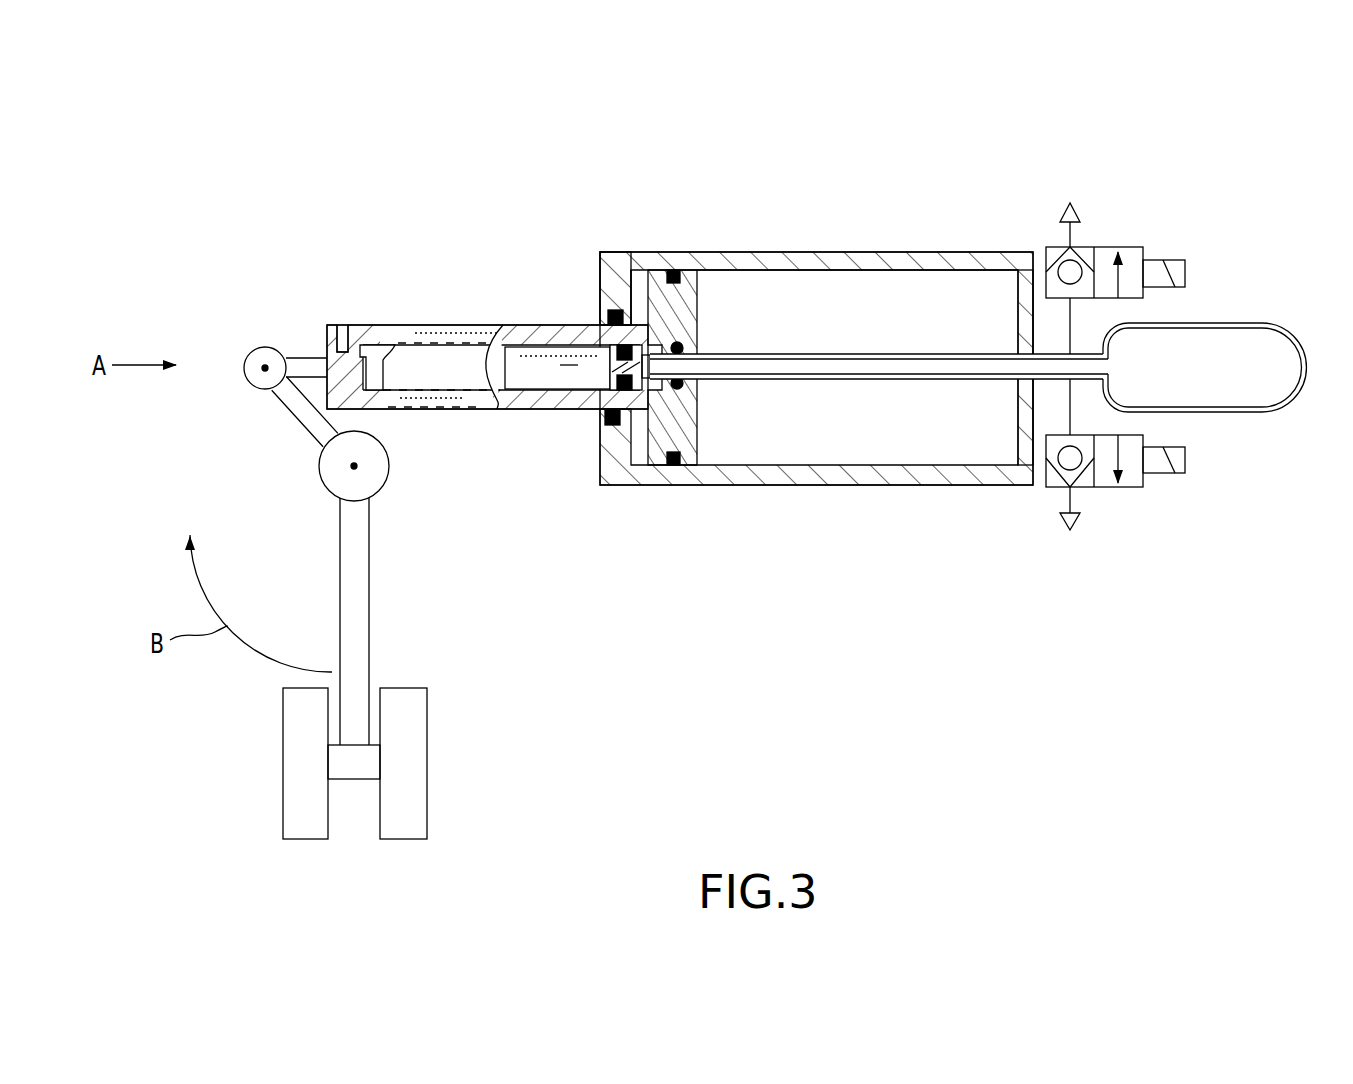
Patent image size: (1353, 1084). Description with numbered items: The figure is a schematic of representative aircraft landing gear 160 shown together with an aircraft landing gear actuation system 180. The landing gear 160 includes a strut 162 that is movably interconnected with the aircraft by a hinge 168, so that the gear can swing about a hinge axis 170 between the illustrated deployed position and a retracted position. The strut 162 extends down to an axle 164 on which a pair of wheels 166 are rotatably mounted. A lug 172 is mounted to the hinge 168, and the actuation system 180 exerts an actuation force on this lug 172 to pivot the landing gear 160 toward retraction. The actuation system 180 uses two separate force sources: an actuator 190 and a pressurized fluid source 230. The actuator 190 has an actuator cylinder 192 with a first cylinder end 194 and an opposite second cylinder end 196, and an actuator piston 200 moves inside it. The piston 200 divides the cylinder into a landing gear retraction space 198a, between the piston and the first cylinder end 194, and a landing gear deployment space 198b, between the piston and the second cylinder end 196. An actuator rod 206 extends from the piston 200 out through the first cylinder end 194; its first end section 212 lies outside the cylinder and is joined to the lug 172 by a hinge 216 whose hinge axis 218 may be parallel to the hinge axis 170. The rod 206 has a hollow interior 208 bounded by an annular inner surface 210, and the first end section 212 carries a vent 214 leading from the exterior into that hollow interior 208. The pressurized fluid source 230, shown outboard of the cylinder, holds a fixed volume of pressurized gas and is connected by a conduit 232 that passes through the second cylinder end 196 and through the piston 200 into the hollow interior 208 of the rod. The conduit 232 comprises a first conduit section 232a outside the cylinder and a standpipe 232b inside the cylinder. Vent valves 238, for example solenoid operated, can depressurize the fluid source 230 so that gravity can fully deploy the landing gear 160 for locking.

The aircraft landing gear 160 is at (507, 619).
The strut 162 is at (368, 610).
The axle 164 is at (353, 779).
The wheels 166 is at (283, 775).
The hinge 168 is at (389, 466).
The hinge axis 170 is at (350, 481).
The lug 172 is at (300, 432).
The aircraft landing gear actuation system 180 is at (1182, 166).
The actuator 190 is at (966, 189).
The actuator cylinder 192 is at (942, 485).
The first cylinder end 194 is at (600, 293).
The second cylinder end 196 is at (1030, 327).
The landing gear retraction space 198a is at (642, 283).
The landing gear deployment space 198b is at (792, 288).
The actuator piston 200 is at (700, 327).
The actuator rod 206 is at (483, 323).
The hollow interior 208 is at (535, 386).
The annular inner surface 210 is at (378, 349).
The first end section 212 is at (357, 262).
The vent 214 is at (344, 314).
The hinge 216 is at (265, 347).
The hinge axis 218 is at (243, 355).
The pressurized fluid source 230 is at (1247, 412).
The conduit 232 is at (952, 358).
The first conduit section 232a is at (1090, 353).
The standpipe 232b is at (810, 380).
The vent valves 238 is at (1157, 248).